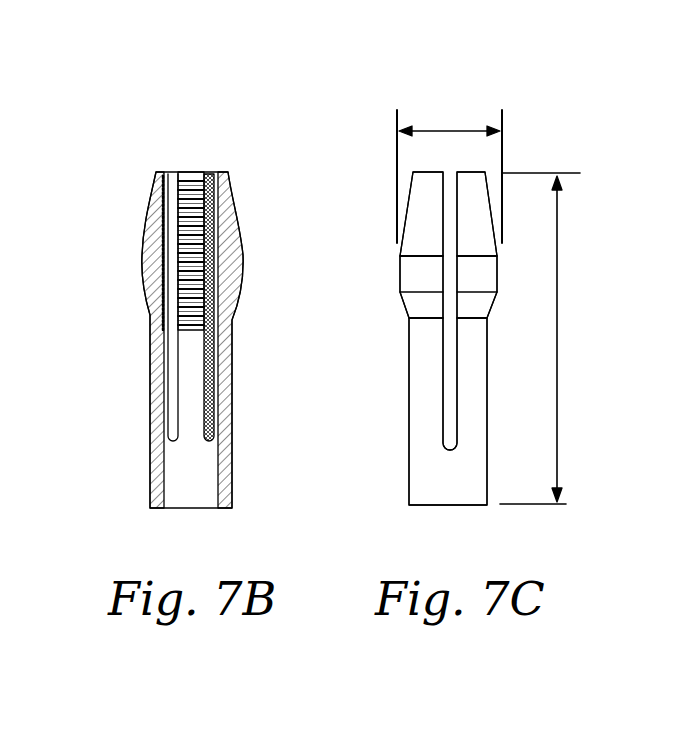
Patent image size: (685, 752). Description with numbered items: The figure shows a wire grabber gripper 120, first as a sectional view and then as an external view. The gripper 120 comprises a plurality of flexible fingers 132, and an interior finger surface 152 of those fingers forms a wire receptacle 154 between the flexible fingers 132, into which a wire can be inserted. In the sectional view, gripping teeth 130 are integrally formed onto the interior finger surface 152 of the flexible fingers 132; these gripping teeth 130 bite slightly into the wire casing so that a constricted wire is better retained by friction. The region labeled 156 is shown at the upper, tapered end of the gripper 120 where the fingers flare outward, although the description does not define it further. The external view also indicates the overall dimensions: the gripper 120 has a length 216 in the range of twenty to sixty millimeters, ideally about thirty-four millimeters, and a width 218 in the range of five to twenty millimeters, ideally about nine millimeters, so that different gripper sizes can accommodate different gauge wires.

In FIG. 7B, the gripper 120 is at (190, 146).
In FIG. 7C, the gripper 120 is at (381, 138).
In FIG. 7B, the gripping teeth 130 is at (93, 307).
In FIG. 7B, the interior finger surface 152 is at (157, 238).
In FIG. 7B, the flexible fingers 132 is at (150, 297).
In FIG. 7C, the flexible fingers 132 is at (420, 366).
In FIG. 7B, the wire receptacle 154 is at (212, 347).
In FIG. 7C, the wire receptacle 154 is at (450, 308).
In FIG. 7B, the tapered head 156 is at (150, 206).
In FIG. 7C, the tapered head 156 is at (420, 205).
In FIG. 7C, the length 216 is at (557, 415).
In FIG. 7C, the width 218 is at (452, 128).